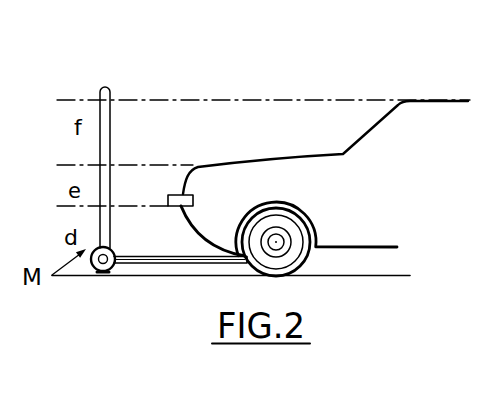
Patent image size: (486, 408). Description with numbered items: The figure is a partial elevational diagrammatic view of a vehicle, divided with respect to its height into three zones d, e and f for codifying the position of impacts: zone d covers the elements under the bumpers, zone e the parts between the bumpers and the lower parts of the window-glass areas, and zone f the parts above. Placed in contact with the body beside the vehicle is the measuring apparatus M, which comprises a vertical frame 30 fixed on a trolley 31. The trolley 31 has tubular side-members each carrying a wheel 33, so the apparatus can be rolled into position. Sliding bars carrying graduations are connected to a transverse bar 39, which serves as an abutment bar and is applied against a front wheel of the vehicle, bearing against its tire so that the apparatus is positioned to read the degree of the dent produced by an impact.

The vertical frame 30 is at (109, 150).
The trolley 31 is at (180, 264).
The wheel 33 is at (110, 272).
The transverse bar 39 is at (240, 248).